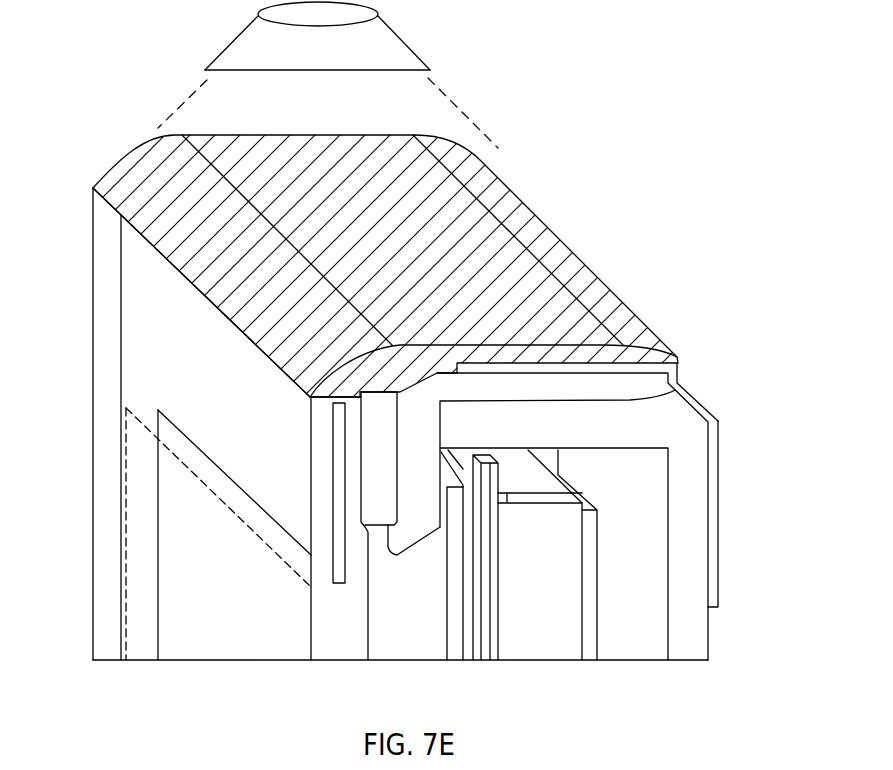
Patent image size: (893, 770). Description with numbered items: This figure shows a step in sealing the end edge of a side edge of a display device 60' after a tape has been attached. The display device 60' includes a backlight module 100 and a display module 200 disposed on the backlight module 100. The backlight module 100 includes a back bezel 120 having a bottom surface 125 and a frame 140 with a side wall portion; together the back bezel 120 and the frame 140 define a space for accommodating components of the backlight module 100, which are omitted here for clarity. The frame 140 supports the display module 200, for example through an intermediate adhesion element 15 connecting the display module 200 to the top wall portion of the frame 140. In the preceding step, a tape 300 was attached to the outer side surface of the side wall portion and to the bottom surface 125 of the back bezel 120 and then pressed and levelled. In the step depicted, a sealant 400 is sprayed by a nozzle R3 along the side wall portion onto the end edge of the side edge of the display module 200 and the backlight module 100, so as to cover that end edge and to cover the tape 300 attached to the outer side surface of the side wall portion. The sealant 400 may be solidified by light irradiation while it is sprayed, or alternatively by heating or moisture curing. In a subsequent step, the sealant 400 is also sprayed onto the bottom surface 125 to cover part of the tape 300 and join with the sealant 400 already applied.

The display device 60' is at (381, 339).
The nozzle R3 is at (302, 65).
The sealant 400 is at (542, 238).
The tape 300 is at (693, 400).
The bottom surface 125 is at (712, 573).
The back bezel 120 is at (567, 441).
The intermediate adhesion element 15 is at (363, 447).
The frame 140 is at (397, 483).
The display module 200 is at (368, 668).
The backlight module 100 is at (713, 668).